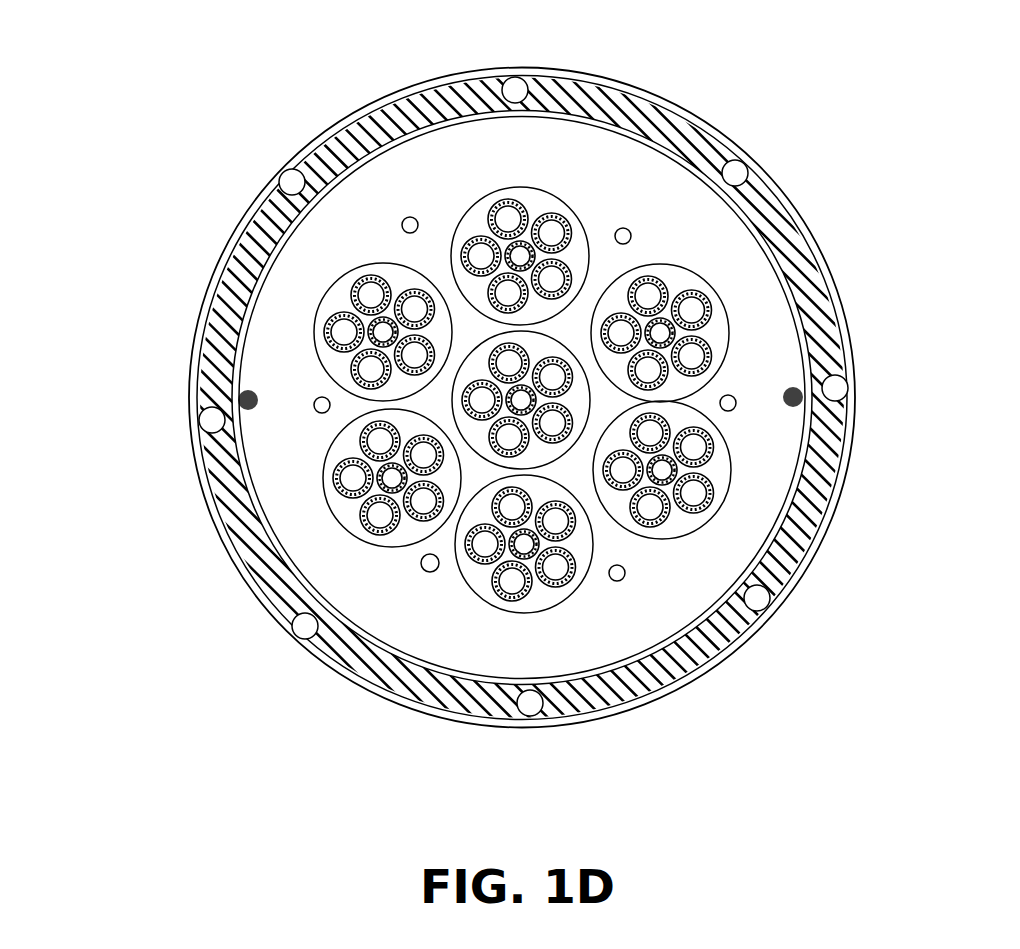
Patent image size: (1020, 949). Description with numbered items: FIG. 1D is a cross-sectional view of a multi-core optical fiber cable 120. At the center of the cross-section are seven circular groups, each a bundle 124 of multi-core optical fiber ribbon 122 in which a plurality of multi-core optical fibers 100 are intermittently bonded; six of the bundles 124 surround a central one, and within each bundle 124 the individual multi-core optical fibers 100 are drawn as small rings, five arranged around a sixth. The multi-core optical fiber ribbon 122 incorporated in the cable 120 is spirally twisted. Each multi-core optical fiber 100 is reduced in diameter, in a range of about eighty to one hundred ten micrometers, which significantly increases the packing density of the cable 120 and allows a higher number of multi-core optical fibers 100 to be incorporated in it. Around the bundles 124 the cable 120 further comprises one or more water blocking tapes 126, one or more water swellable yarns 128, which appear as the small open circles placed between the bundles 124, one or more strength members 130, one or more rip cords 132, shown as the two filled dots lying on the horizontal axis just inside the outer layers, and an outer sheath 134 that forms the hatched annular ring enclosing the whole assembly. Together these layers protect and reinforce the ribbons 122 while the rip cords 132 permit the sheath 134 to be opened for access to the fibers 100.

The multi-core optical fiber cable 120 is at (100, 43).
The multi-core optical fiber 100 is at (200, 295).
The multi-core optical fiber ribbon 122 is at (350, 370).
The bundle 124 is at (378, 264).
The water blocking tape 126 is at (203, 453).
The water swellable yarn 128 is at (420, 567).
The strength member 130 is at (395, 708).
The rip cord 132 is at (188, 402).
The outer sheath 134 is at (213, 518).